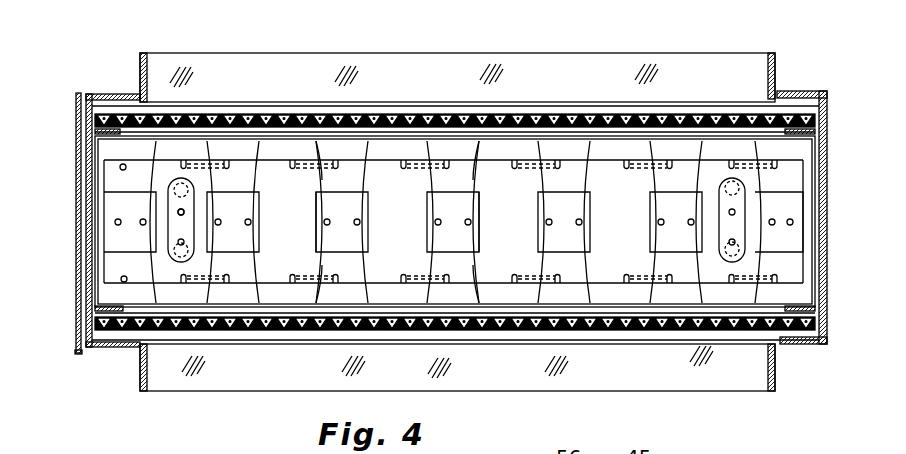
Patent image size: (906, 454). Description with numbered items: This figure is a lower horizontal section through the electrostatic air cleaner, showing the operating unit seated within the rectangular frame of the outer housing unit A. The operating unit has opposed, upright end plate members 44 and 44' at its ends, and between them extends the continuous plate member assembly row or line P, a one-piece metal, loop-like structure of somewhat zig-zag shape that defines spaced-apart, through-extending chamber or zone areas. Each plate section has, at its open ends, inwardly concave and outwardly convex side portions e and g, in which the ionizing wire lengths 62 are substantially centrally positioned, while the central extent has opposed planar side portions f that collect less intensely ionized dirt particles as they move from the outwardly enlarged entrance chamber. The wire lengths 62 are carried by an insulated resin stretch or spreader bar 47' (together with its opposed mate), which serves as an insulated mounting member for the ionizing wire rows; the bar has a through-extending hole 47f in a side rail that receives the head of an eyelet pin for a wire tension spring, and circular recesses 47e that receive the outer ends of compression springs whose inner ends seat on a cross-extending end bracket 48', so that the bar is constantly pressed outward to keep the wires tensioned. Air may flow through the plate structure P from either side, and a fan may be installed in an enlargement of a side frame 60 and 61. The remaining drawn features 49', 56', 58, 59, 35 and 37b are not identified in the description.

The side frame 61 is at (247, 53).
The side frame 60 is at (220, 393).
The upper insulation sheet 59 is at (321, 106).
The lower insulation sheet 58 is at (349, 333).
The wire stretch 62 is at (522, 283).
The through-extending hole 47f is at (82, 146).
The end plate member 44 is at (87, 223).
The end plate member 44' is at (839, 217).
The frame foot 37b is at (80, 354).
The outer housing unit A is at (800, 92).
The bottom rail 35 is at (829, 337).
The insulated stretch or spreader bar 47' is at (419, 222).
The plate member assembly row P is at (650, 290).
The holes 56' is at (425, 220).
The cross-extending mounting bracket 48' is at (456, 220).
The aperture 49' is at (213, 201).
The circular recess 47e is at (168, 252).
The outwardly convex side portion g is at (316, 181).
The planar side portion f is at (313, 215).
The inwardly concave side portion e is at (316, 266).